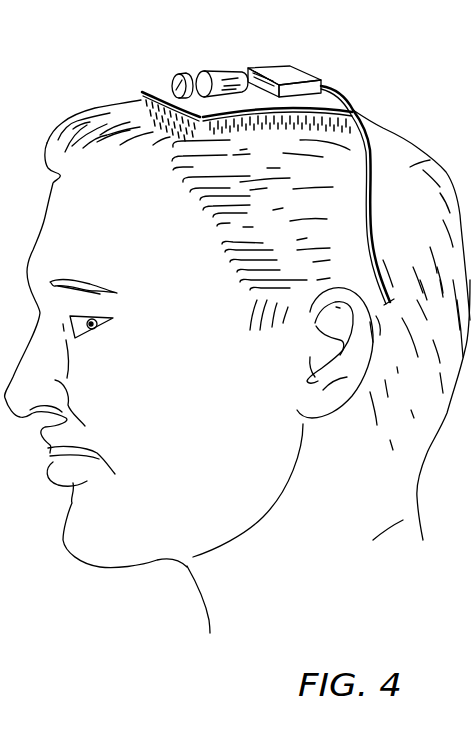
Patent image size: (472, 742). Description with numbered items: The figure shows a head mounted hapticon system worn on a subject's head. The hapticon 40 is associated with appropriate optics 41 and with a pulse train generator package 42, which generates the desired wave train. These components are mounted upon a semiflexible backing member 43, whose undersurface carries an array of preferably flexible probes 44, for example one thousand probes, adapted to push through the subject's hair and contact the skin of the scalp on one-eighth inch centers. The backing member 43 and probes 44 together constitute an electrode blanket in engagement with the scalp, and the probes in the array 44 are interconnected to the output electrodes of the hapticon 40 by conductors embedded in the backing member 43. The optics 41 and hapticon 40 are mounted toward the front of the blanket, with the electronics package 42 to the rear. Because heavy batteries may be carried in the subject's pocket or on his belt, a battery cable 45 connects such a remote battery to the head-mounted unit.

The hapticon 40 is at (224, 78).
The optics 41 is at (186, 74).
The pulse train generator package 42 is at (292, 74).
The semiflexible backing member 43 is at (142, 92).
The array of flexible probes 44 is at (138, 94).
The battery cable 45 is at (373, 250).